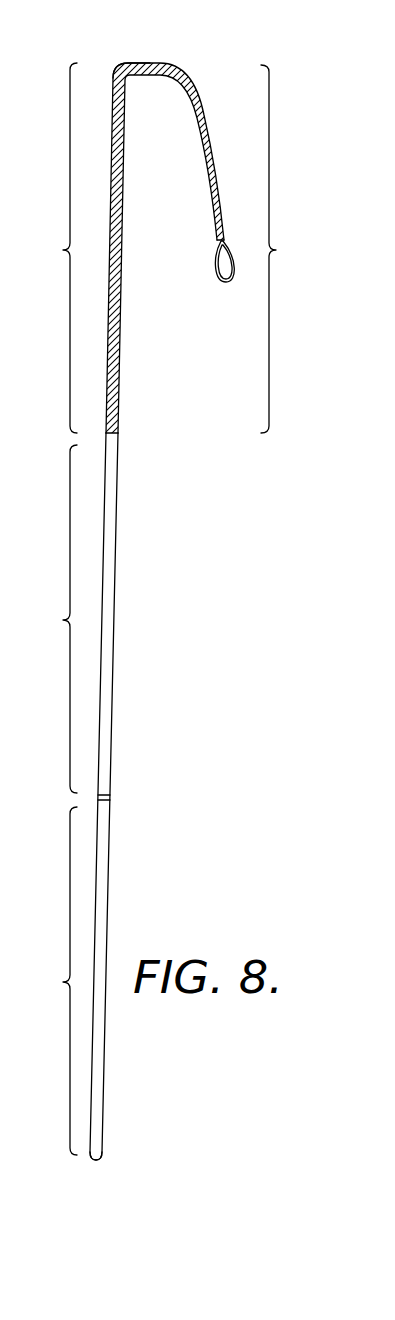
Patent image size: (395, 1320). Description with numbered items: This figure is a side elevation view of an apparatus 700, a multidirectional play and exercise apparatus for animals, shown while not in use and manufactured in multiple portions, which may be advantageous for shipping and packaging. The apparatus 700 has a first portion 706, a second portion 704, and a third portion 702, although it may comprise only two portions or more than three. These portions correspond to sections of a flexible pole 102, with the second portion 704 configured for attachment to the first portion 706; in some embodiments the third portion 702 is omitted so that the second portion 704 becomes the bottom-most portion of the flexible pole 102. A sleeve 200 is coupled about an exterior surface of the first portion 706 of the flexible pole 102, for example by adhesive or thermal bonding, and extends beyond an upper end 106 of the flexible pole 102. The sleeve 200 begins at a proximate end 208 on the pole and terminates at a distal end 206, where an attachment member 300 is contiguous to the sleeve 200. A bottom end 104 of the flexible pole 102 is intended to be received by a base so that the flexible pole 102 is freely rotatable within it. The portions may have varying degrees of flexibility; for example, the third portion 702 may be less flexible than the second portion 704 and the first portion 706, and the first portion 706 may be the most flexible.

The apparatus 700 is at (291, 81).
The flexible pole 102 is at (117, 362).
The bottom end 104 is at (92, 1162).
The upper end 106 is at (127, 63).
The sleeve 200 is at (203, 112).
The distal end 206 is at (226, 240).
The proximate end 208 is at (118, 432).
The attachment member 300 is at (224, 283).
The third portion 702 is at (51, 981).
The second portion 704 is at (51, 619).
The first portion 706 is at (169, 248).